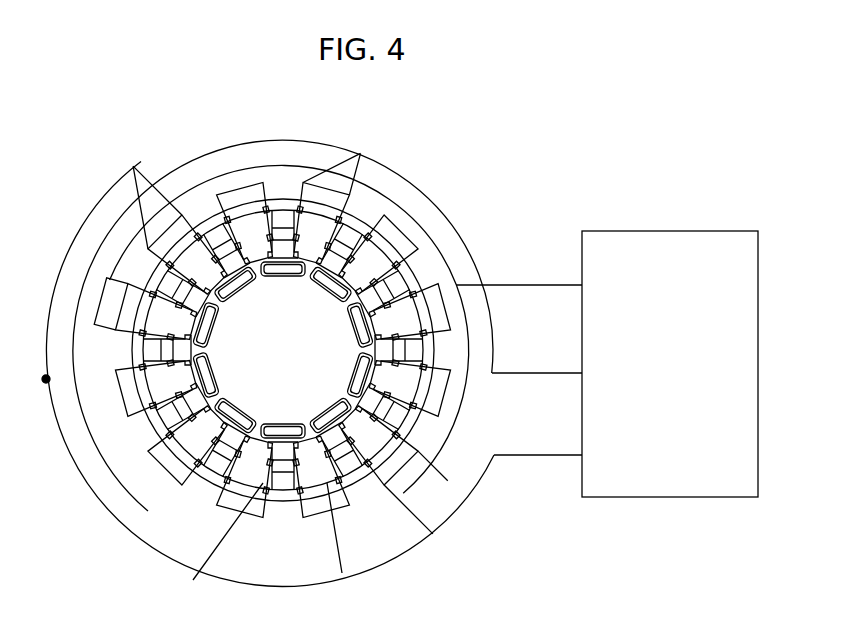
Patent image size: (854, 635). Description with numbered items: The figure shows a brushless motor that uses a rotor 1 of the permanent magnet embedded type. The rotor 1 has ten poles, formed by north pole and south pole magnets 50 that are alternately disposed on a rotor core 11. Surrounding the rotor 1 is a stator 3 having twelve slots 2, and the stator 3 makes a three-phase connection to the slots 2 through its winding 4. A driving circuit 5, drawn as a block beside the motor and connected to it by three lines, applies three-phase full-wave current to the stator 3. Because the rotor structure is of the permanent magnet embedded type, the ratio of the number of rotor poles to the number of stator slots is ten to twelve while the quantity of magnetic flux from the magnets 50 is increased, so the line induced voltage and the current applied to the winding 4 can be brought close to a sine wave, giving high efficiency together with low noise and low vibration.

The rotor 1 is at (274, 440).
The slots 2 is at (249, 226).
The stator 3 is at (320, 212).
The winding 4 is at (430, 204).
The driving circuit 5 is at (663, 263).
The rotor core 11 is at (270, 402).
The magnets 50 is at (336, 425).